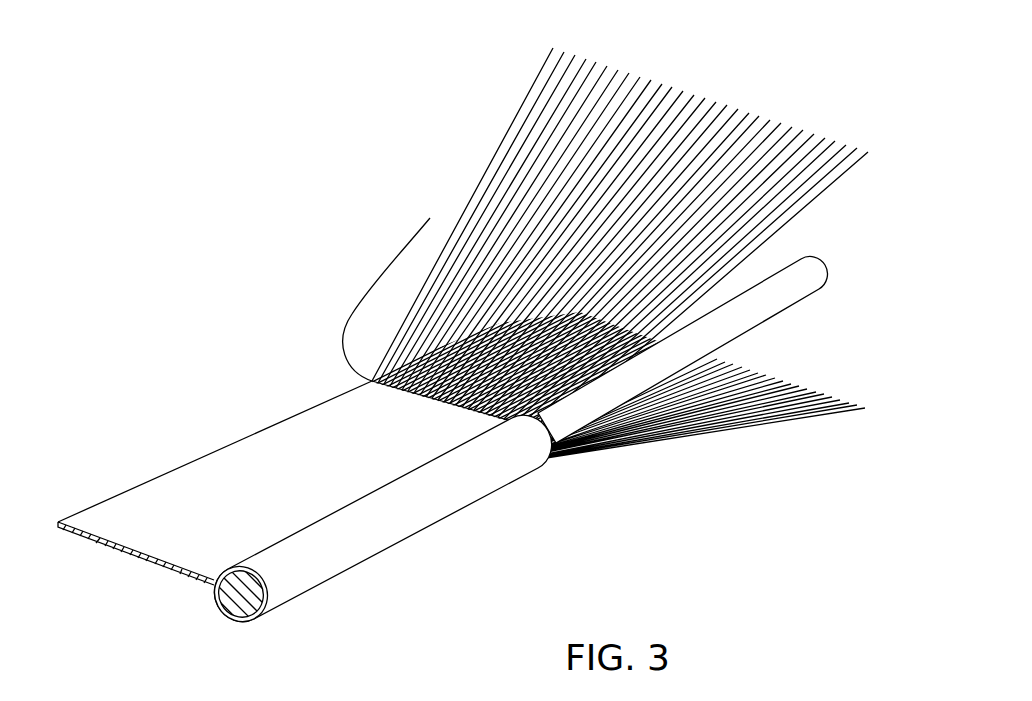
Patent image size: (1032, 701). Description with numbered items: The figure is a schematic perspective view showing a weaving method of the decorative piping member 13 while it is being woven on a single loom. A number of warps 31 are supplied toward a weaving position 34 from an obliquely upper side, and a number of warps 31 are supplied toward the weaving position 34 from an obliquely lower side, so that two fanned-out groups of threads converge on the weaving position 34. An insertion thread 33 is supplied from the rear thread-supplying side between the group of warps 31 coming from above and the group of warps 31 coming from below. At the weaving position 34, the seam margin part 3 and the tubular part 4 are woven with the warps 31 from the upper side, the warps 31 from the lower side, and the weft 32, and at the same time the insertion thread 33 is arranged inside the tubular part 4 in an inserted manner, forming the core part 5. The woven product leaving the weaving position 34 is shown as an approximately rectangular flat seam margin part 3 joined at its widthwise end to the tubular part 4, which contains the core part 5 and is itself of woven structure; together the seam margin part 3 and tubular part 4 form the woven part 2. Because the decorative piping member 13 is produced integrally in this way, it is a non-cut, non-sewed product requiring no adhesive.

The woven part 2 is at (97, 553).
The seam margin part 3 is at (150, 542).
The tubular part 4 is at (218, 599).
The core part (insertion thread) 5 is at (227, 618).
The decorative piping member 13 is at (173, 503).
The warps 31 is at (533, 90).
The weft 32 is at (382, 272).
The insertion thread 33 is at (787, 292).
The weaving position 34 is at (372, 381).